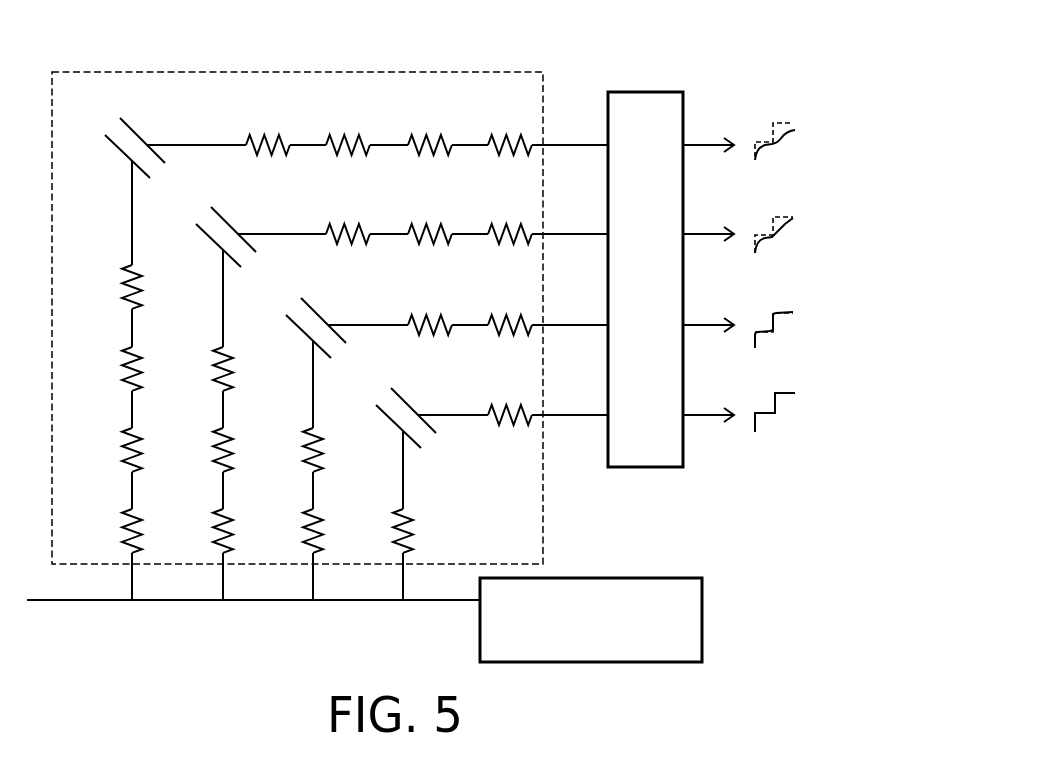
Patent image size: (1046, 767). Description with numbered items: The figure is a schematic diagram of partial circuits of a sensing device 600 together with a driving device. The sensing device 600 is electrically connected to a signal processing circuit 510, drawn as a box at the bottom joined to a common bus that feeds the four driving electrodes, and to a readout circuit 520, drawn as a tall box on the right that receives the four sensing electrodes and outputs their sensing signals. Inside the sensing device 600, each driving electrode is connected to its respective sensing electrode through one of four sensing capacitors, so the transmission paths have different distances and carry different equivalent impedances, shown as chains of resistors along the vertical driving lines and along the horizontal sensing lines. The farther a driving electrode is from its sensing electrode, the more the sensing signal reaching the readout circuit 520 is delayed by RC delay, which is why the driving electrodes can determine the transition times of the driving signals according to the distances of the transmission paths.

The sensing device 600 is at (141, 72).
The readout circuit 520 is at (647, 91).
The signal processing circuit 510 is at (652, 578).